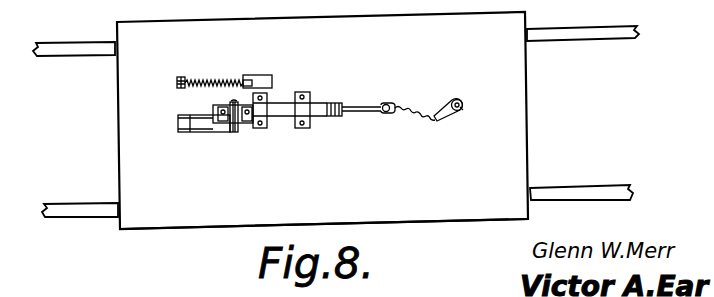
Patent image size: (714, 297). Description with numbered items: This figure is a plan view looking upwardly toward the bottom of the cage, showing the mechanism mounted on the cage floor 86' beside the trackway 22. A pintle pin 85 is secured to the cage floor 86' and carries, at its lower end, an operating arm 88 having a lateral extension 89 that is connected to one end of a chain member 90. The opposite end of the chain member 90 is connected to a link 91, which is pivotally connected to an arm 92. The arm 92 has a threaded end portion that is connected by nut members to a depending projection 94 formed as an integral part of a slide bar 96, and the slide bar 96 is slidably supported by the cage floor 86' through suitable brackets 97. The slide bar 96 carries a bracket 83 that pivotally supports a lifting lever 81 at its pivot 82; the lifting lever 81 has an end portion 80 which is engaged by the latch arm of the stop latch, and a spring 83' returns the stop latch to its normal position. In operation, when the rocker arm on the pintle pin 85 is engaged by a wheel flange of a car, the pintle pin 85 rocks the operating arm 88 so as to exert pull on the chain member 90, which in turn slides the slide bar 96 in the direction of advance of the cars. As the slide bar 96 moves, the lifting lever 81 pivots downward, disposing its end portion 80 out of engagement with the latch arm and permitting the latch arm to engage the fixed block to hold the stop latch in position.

The trackway 22 is at (545, 35).
The end portion of lifting lever 80 is at (183, 132).
The lifting lever 81 is at (208, 127).
The pivot 82 is at (234, 133).
The bracket 83 is at (238, 134).
The spring 83' is at (224, 69).
The pintle pin 85 is at (462, 100).
The cage floor 86' is at (324, 236).
The operating arm 88 is at (463, 110).
The lateral extension 89 is at (443, 120).
The chain member 90 is at (415, 117).
The link 91 is at (383, 113).
The arm 92 is at (363, 106).
The depending projection 94 is at (335, 117).
The slide bar 96 is at (282, 112).
The brackets 97 is at (272, 101).